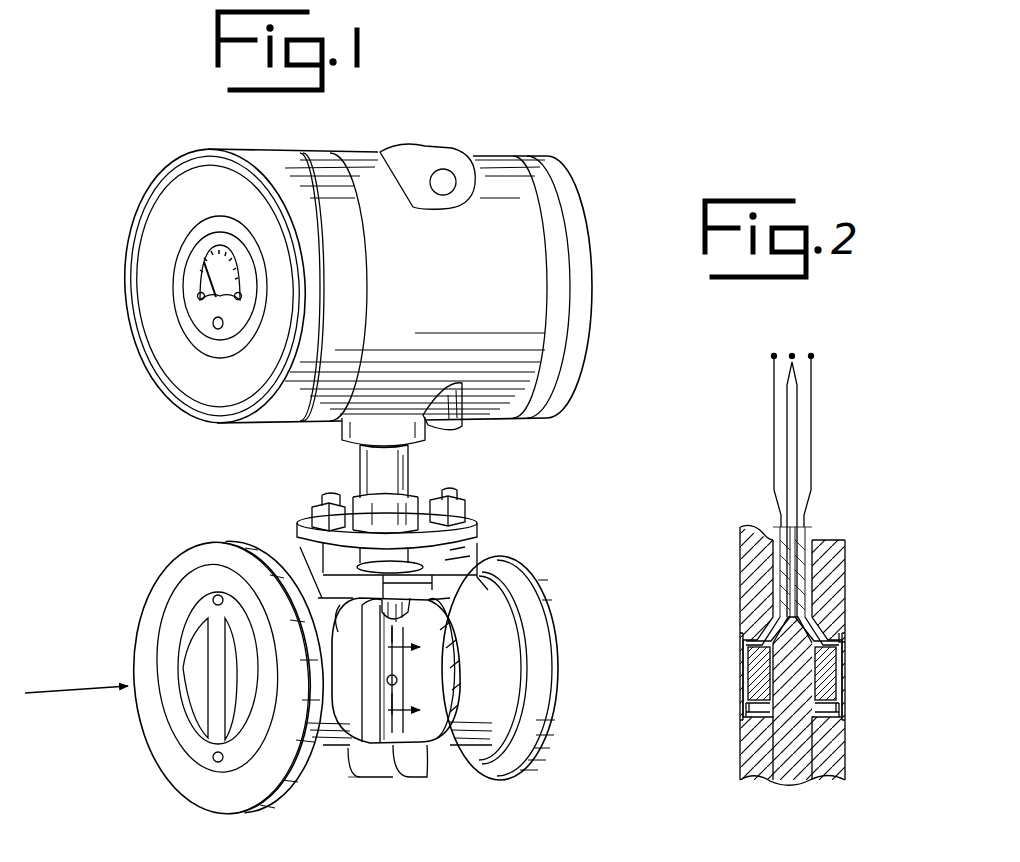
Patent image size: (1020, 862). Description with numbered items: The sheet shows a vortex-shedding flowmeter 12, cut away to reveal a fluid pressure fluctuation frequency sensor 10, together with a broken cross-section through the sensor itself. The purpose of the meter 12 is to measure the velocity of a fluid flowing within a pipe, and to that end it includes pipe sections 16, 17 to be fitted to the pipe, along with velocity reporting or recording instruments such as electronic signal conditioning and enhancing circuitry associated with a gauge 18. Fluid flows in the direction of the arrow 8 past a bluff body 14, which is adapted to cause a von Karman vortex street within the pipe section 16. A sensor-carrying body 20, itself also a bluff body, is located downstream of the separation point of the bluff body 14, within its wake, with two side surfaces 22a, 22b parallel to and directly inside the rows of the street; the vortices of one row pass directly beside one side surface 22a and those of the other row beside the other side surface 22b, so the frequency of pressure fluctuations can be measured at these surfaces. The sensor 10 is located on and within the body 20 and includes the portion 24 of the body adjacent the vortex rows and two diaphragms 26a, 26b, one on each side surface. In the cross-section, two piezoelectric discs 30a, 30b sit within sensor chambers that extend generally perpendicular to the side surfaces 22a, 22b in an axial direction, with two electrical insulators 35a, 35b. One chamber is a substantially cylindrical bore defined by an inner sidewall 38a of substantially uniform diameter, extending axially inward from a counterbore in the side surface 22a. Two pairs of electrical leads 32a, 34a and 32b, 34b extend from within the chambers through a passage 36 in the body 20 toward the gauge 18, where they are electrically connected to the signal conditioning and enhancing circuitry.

In FIG. 1, the arrow 8 is at (74, 693).
In FIG. 1, the fluid pressure fluctuation frequency sensor 10 is at (368, 720).
In FIG. 2, the fluid pressure fluctuation frequency sensor 10 is at (858, 618).
In FIG. 1, the vortex-shedding flowmeter 12 is at (528, 565).
In FIG. 1, the bluff body 14 is at (218, 710).
In FIG. 1, the pipe section 16 is at (490, 760).
In FIG. 1, the pipe section 17 is at (213, 788).
In FIG. 1, the gauge 18 is at (208, 350).
In FIG. 1, the sensor-carrying body 20 is at (368, 627).
In FIG. 1, the side surface 22a is at (395, 735).
In FIG. 2, the side surface 22a is at (845, 548).
In FIG. 2, the side surface 22b is at (740, 548).
In FIG. 2, the portion of the body 24 is at (823, 752).
In FIG. 2, the diaphragm 26a is at (850, 664).
In FIG. 2, the diaphragm 26b is at (741, 718).
In FIG. 2, the piezoelectric disc 30a is at (830, 693).
In FIG. 2, the piezoelectric disc 30b is at (757, 681).
In FIG. 2, the electrical lead 32a is at (826, 622).
In FIG. 2, the electrical lead 32b is at (757, 641).
In FIG. 2, the electrical lead 34a is at (787, 722).
In FIG. 2, the electrical lead 34b is at (777, 722).
In FIG. 2, the electrical insulator 35a is at (838, 712).
In FIG. 2, the electrical insulator 35b is at (750, 710).
In FIG. 2, the passage 36 is at (808, 540).
In FIG. 2, the inner sidewall 38a is at (845, 650).